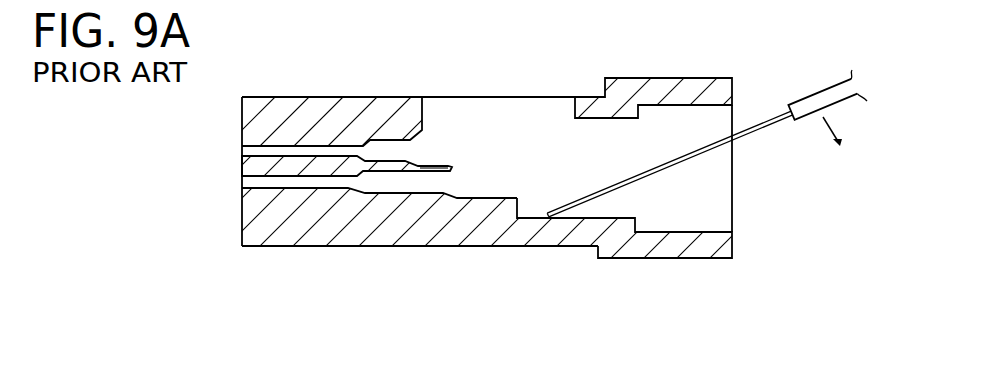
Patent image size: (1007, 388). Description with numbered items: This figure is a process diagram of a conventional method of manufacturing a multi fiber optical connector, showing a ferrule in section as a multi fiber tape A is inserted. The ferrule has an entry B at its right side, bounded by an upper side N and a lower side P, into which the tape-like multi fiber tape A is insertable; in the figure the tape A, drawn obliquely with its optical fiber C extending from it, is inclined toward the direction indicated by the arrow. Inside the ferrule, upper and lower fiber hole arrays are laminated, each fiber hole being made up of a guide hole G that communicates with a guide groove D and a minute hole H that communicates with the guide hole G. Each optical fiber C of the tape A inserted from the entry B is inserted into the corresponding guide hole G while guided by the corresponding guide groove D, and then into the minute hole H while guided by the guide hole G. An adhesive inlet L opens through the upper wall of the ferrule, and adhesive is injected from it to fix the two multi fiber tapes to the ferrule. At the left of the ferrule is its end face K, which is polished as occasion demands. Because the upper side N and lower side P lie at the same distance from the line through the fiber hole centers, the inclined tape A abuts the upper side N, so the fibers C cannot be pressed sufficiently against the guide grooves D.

The end face K is at (242, 127).
The minute hole H is at (317, 150).
The guide hole G is at (307, 57).
The guide groove D is at (437, 160).
The adhesive inlet L is at (513, 113).
The upper side of the entry N is at (732, 104).
The entry B is at (723, 197).
The lower side of the entry P is at (732, 232).
The optical fiber C is at (628, 175).
The multi fiber tape A is at (805, 90).